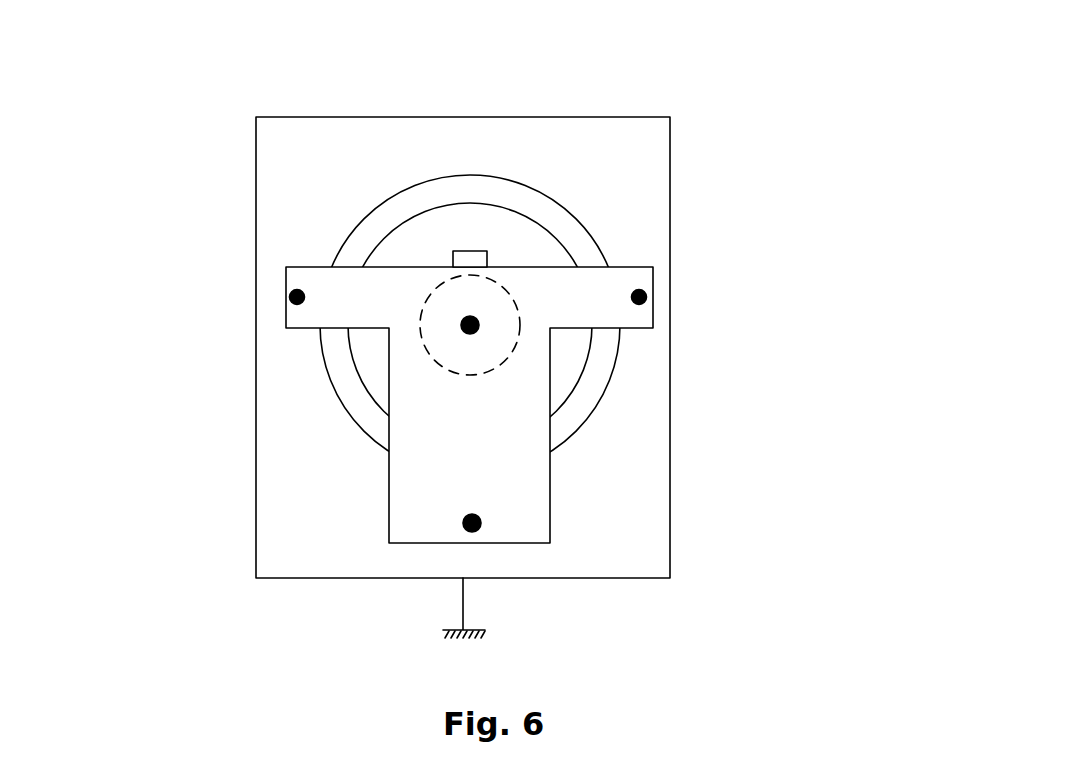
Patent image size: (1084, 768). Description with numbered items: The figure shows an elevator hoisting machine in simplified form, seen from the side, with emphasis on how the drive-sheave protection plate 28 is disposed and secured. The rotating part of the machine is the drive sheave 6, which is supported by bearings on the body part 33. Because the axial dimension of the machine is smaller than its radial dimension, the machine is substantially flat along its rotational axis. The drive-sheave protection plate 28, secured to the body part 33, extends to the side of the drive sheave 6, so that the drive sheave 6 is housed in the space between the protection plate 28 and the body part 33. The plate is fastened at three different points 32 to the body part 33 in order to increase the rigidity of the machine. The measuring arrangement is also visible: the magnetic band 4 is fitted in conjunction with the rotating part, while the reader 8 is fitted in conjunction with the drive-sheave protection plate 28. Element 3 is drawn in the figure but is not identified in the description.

The stator ring 3 is at (578, 220).
The magnetic band 4 is at (509, 358).
The drive sheave 6 is at (432, 207).
The reader 8 is at (470, 251).
The drive-sheave protection plate 28 is at (422, 463).
The securing points 32 is at (470, 325).
The body part 33 is at (562, 127).